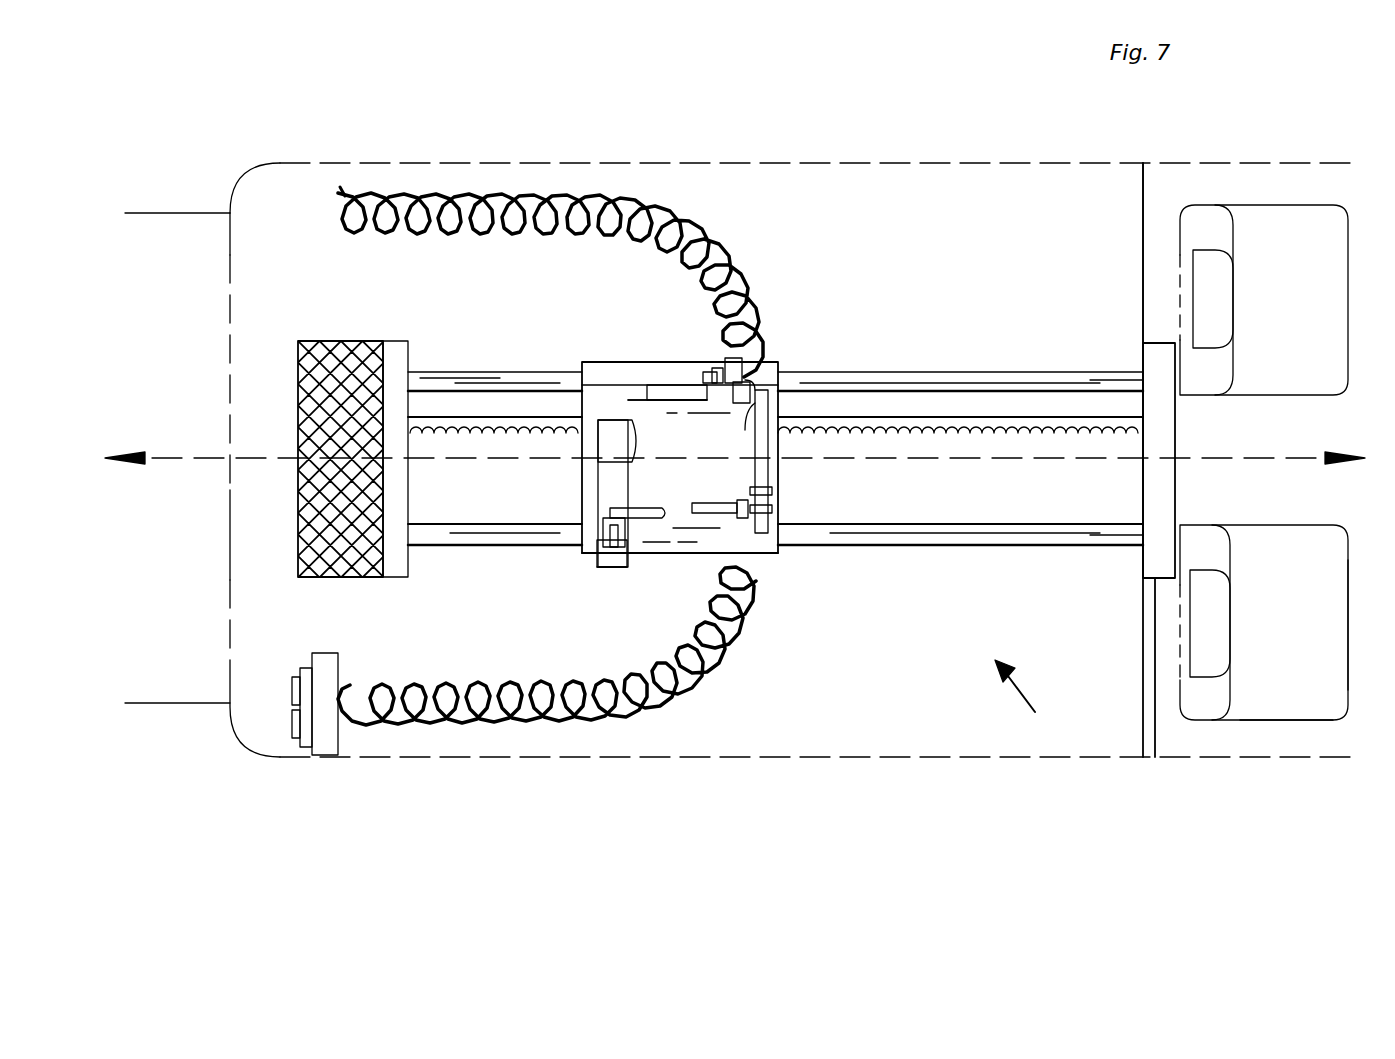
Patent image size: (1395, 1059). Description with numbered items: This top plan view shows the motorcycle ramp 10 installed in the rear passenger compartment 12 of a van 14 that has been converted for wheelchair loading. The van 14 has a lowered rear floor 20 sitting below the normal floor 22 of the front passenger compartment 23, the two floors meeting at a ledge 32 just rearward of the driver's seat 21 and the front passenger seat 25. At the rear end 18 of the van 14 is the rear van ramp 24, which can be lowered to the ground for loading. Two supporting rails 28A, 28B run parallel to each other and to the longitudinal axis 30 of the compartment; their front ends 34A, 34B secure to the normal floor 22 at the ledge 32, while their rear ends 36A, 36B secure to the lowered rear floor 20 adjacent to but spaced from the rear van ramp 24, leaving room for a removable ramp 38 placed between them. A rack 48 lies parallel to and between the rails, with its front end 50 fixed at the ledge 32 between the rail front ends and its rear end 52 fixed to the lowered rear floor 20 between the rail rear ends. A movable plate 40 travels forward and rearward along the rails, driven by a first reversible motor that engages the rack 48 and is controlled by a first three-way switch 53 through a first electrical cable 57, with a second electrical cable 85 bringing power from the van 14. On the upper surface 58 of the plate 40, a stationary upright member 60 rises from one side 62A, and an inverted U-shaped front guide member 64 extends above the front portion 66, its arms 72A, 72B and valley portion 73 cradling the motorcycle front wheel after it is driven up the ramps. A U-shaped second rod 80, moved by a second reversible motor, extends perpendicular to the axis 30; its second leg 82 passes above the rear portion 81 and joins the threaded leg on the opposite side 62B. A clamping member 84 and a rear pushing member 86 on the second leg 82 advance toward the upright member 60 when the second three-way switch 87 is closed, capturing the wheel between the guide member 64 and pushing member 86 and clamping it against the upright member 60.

The motorcycle ramp 10 is at (1037, 705).
The rear passenger compartment 12 is at (863, 720).
The van 14 is at (1170, 737).
The rear end 18 is at (229, 213).
The lowered rear floor 20 is at (780, 694).
The driver's seat 21 is at (1297, 222).
The normal floor 22 is at (1264, 600).
The front passenger compartment 23 is at (1367, 697).
The rear van ramp 24 is at (178, 685).
The front passenger seat 25 is at (1295, 707).
The supporting rail 28A is at (1023, 378).
The supporting rail 28B is at (1025, 548).
The longitudinal axis 30 is at (183, 460).
The ledge 32 is at (1143, 222).
The front end 34A is at (1140, 355).
The front end 34B is at (1133, 547).
The rear end 36A is at (433, 400).
The rear end 36B is at (433, 540).
The removable ramp 38 is at (287, 560).
The movable plate 40 is at (713, 557).
The rack 48 is at (972, 432).
The front end 50 is at (1141, 415).
The rear end 52 is at (428, 383).
The first three-way switch 53 is at (292, 690).
The first electrical cable 57 is at (627, 697).
The upper surface 58 is at (680, 457).
The stationary upright member 60 is at (668, 398).
The side 62A is at (605, 362).
The second side 62B is at (590, 570).
The inverted U-shaped front guide member 64 is at (768, 465).
The front portion 66 is at (774, 498).
The left arm 72A is at (747, 362).
The arm 72B is at (752, 558).
The valley portion 73 is at (775, 400).
The U-shaped second rod 80 is at (614, 572).
The rear portion 81 is at (582, 478).
The second leg 82 is at (580, 556).
The clamping member 84 is at (665, 555).
The second electrical cable 85 is at (672, 247).
The rear pushing member 86 is at (603, 402).
The second three-way switch 87 is at (283, 720).